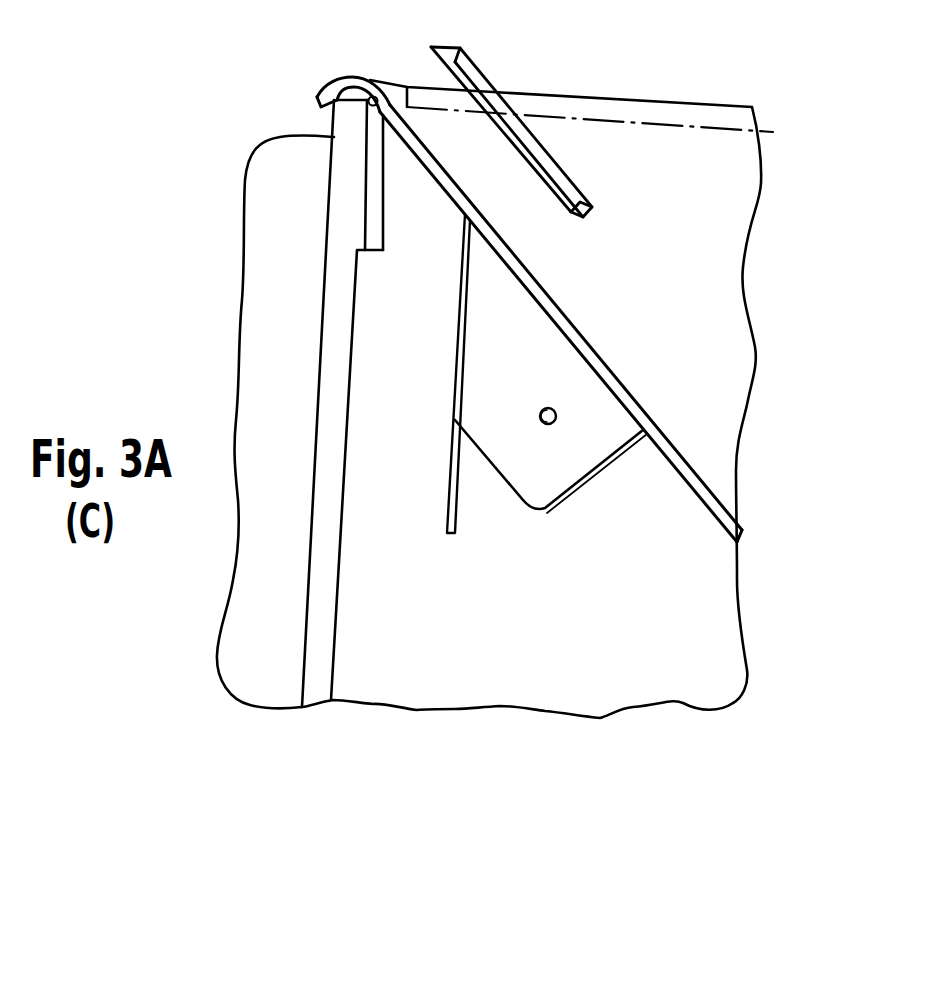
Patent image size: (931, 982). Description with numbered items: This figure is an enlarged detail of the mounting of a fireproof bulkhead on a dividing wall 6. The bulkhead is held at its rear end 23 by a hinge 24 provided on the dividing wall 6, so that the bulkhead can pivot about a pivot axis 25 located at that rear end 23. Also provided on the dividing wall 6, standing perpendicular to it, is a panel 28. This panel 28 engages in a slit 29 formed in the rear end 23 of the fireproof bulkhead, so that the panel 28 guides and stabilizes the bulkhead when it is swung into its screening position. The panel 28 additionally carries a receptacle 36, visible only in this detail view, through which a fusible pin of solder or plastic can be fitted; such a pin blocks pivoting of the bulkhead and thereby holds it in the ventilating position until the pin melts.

The dividing wall 6 is at (715, 273).
The rear end 23 is at (330, 359).
The hinge 24 is at (367, 178).
The pivot axis 25 is at (402, 72).
The panel 28 is at (618, 432).
The slit 29 is at (455, 513).
The receptacle 36 is at (545, 408).